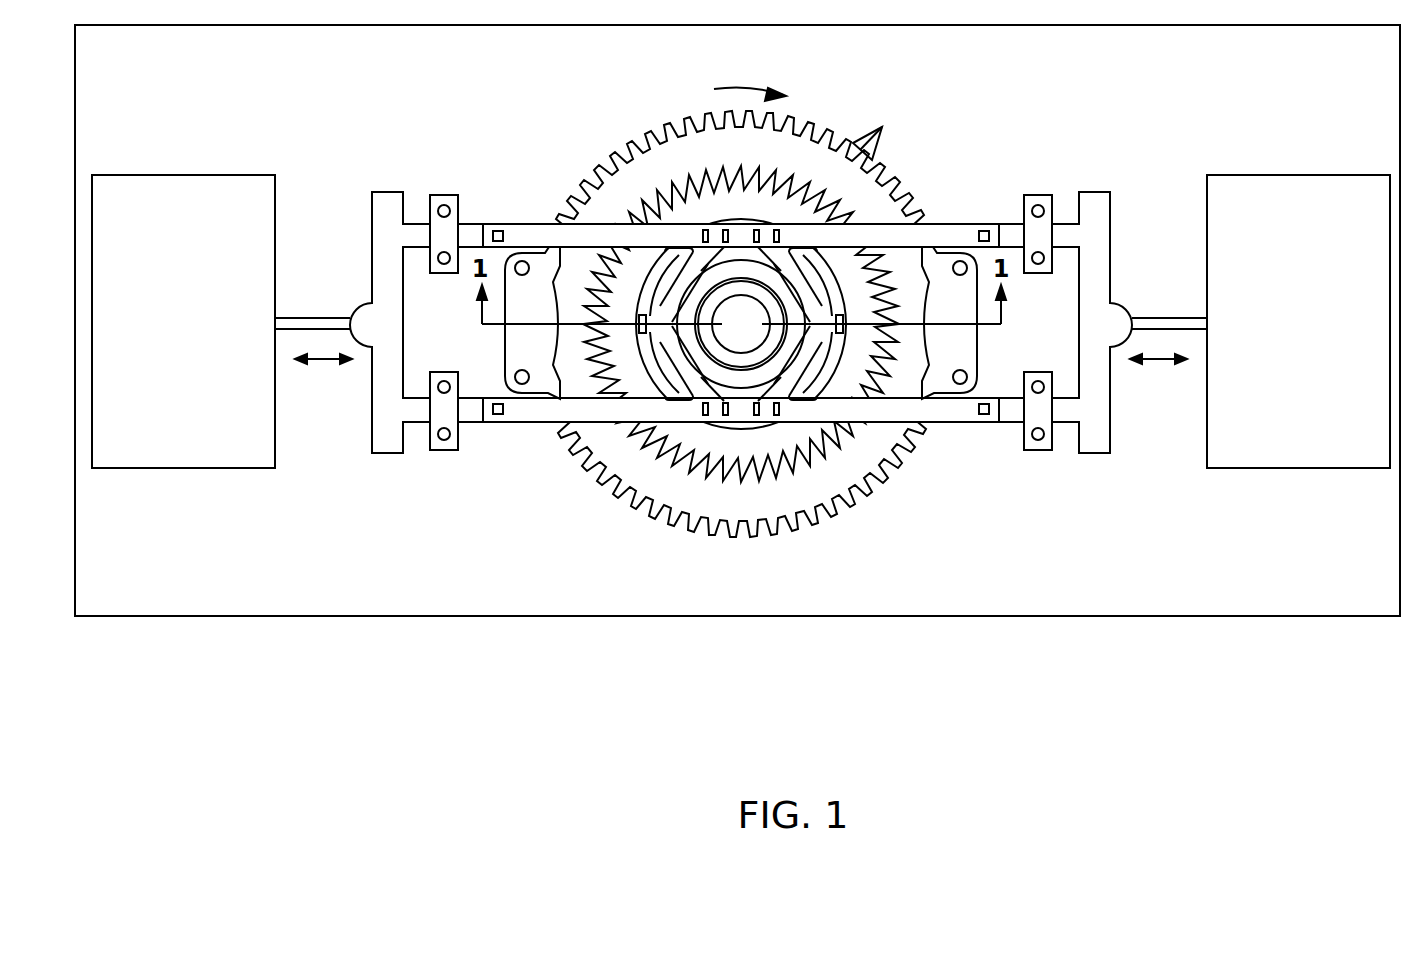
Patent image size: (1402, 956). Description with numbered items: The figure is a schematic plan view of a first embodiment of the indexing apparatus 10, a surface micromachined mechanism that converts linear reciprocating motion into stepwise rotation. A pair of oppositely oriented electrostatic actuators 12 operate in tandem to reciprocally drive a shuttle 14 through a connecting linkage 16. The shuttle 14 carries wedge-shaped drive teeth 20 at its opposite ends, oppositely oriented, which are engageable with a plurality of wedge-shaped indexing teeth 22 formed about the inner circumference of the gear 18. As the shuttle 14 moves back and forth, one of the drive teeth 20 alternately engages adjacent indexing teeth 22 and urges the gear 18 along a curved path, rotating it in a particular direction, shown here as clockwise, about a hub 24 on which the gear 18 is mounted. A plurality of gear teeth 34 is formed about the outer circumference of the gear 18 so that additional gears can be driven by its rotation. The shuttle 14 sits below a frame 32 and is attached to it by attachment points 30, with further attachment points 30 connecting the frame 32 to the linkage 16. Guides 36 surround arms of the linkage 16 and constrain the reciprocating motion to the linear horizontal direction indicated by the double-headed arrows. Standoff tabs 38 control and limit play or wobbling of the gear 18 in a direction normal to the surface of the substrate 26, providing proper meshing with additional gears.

The indexing apparatus 10 is at (1053, 655).
The actuator 12 is at (168, 348).
The shuttle 14 is at (655, 368).
The connecting linkage 16 is at (364, 334).
The gear 18 is at (727, 513).
The drive teeth 20 is at (640, 320).
The indexing teeth 22 is at (623, 240).
The hub 24 is at (726, 337).
The substrate 26 is at (130, 568).
The attachment points 30 is at (510, 450).
The frame 32 is at (628, 316).
The gear teeth 34 is at (875, 129).
The guides 36 is at (443, 195).
The standoff tabs 38 is at (511, 361).